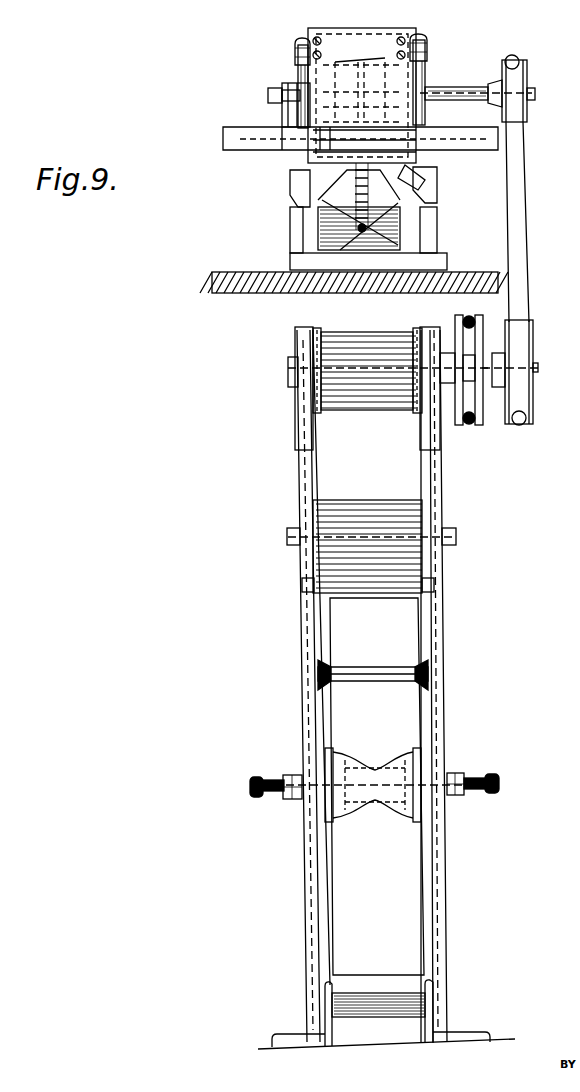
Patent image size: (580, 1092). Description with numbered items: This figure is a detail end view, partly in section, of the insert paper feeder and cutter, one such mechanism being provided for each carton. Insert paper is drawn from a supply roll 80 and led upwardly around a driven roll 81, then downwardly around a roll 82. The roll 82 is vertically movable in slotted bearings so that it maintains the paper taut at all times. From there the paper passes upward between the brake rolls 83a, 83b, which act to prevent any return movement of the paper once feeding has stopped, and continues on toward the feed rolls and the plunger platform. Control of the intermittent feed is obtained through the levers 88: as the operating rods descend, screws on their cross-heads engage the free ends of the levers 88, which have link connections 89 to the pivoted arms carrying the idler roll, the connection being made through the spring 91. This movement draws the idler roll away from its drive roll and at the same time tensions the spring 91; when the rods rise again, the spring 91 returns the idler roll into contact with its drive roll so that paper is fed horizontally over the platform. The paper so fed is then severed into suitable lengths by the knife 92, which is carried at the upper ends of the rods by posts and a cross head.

The supply roll 80 is at (382, 688).
The driven roll 81 is at (362, 342).
The roll 82 is at (366, 506).
The brake roll 83a is at (420, 256).
The brake roll 83b is at (359, 233).
The lever 88 is at (298, 188).
The link connection 89 is at (420, 183).
The spring 91 is at (350, 214).
The knife 92 is at (418, 86).